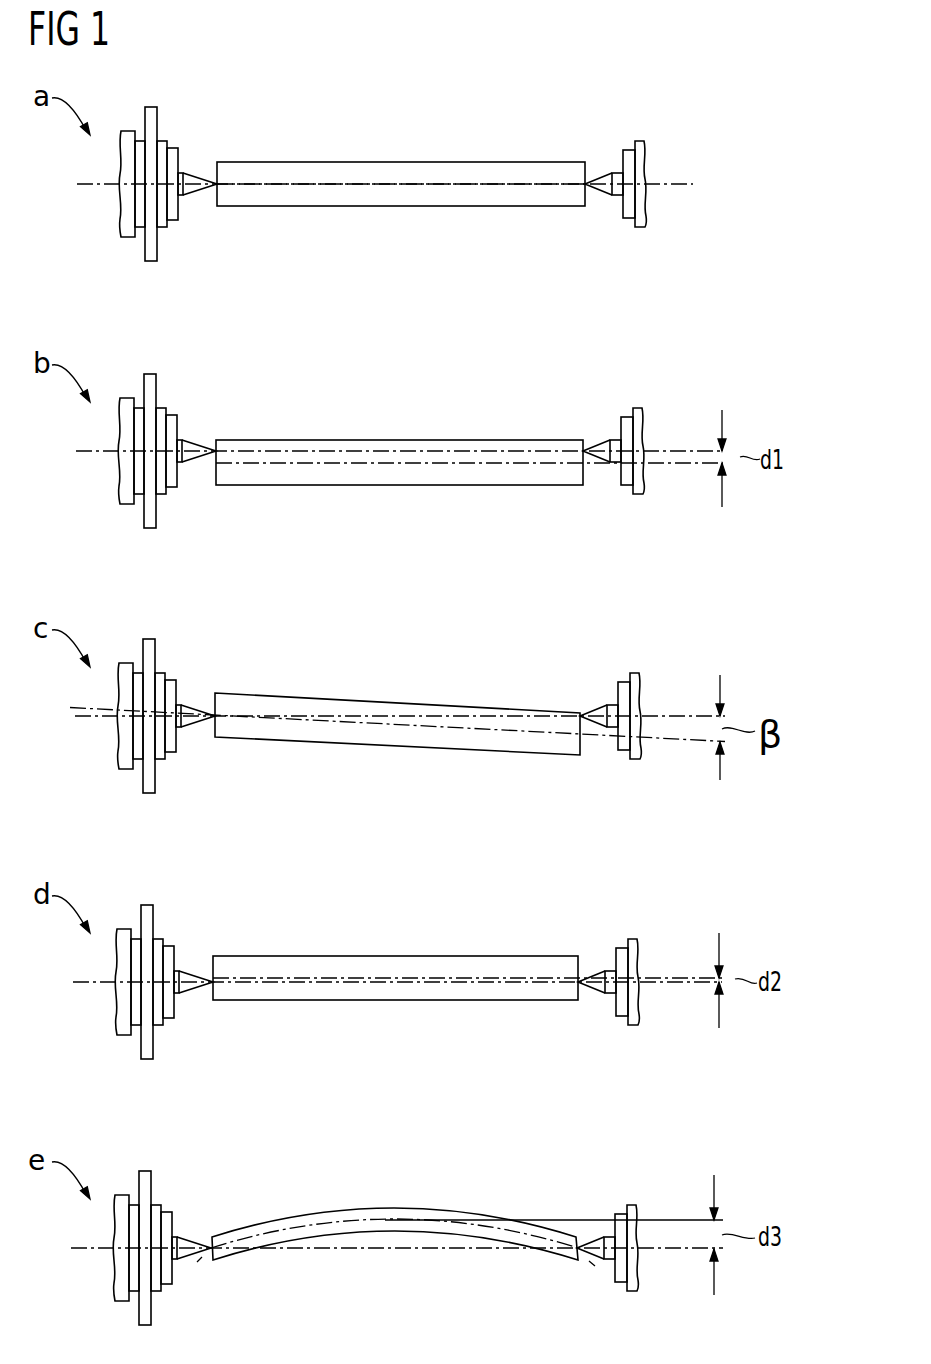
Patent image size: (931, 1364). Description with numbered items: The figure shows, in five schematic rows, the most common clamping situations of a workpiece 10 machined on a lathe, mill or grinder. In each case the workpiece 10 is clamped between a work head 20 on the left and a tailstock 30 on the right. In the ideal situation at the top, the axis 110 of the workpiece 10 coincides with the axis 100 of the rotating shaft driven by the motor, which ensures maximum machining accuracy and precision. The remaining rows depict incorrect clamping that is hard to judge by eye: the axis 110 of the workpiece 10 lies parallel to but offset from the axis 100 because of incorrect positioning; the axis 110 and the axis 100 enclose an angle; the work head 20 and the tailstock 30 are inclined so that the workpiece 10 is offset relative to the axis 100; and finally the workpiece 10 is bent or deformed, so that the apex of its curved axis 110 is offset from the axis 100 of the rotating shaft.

The workpiece 10 is at (397, 162).
The work head 20 is at (162, 140).
The tailstock 30 is at (628, 150).
The axis of the rotating shaft 100 is at (683, 187).
The axis of the workpiece 110 is at (678, 470).